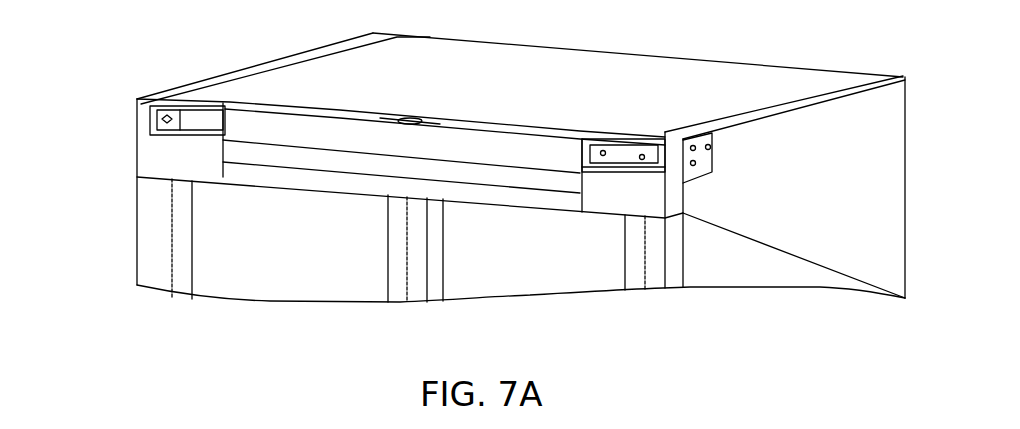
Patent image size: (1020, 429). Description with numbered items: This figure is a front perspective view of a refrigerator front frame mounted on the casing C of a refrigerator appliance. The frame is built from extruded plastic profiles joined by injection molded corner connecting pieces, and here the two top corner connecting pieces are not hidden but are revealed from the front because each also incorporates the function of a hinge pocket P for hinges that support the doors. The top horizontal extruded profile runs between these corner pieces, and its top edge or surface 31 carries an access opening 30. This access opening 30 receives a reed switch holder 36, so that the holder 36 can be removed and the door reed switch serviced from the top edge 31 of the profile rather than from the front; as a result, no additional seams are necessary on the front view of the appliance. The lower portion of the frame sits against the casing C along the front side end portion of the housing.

The hinge pocket P is at (197, 122).
The top edge 31 is at (272, 107).
The reed switch holder 36 is at (398, 120).
The access opening 30 is at (423, 121).
The casing C is at (848, 280).